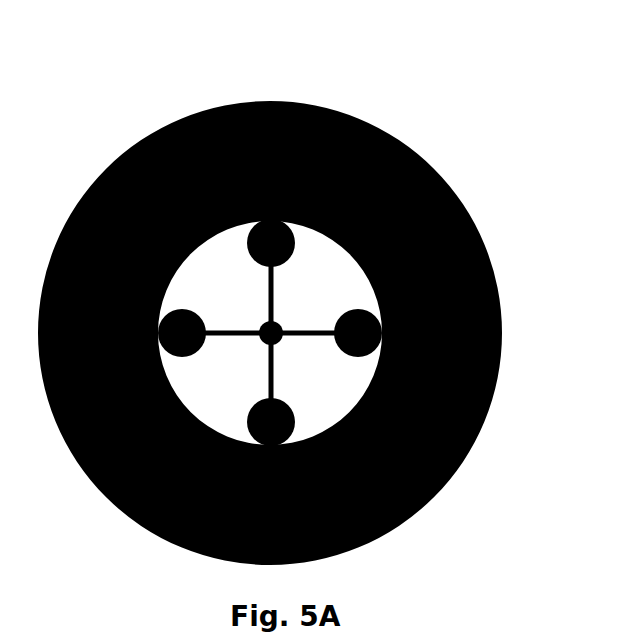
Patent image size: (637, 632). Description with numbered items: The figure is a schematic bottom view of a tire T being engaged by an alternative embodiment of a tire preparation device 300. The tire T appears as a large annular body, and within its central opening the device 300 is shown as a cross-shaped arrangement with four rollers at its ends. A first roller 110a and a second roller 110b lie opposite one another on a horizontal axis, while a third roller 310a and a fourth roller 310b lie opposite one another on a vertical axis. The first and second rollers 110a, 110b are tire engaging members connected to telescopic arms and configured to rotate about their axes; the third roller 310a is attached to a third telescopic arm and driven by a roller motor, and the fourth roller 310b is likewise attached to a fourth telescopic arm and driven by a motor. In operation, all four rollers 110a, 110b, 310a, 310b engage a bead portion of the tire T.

The tire preparation device 300 is at (232, 223).
The tire T is at (470, 217).
The first roller 110a is at (190, 315).
The second roller 110b is at (350, 357).
The third roller 310a is at (292, 256).
The fourth roller 310b is at (247, 417).